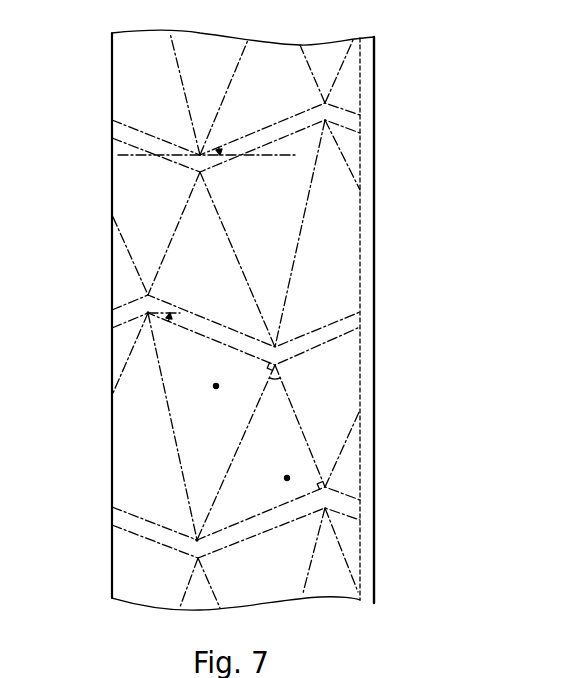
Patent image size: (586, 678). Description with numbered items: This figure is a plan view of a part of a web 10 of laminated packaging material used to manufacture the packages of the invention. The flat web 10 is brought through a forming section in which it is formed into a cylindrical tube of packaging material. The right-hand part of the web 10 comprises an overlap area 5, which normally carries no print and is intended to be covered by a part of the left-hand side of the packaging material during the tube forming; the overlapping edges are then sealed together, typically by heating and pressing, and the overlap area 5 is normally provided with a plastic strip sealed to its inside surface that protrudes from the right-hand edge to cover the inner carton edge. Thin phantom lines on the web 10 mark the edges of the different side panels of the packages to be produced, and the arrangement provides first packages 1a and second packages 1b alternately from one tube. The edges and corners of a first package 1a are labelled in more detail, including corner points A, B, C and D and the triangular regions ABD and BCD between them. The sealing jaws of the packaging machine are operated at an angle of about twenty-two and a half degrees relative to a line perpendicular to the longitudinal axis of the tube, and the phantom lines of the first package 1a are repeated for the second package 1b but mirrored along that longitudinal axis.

The web 10 is at (92, 179).
The overlap area 5 is at (374, 272).
The first package 1a is at (400, 77).
The second package 1b is at (400, 236).
The point A is at (326, 485).
The point B is at (276, 363).
The point C is at (148, 314).
The point D is at (197, 540).
The triangular region ABD is at (287, 478).
The triangular region BCD is at (216, 386).